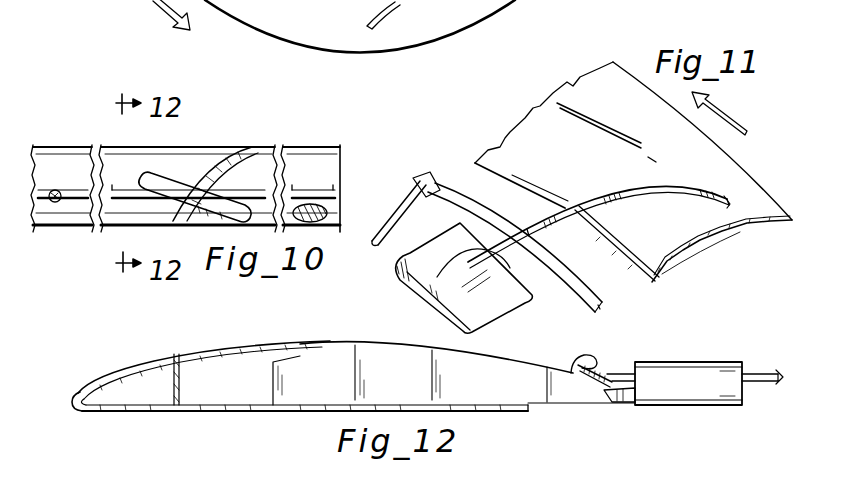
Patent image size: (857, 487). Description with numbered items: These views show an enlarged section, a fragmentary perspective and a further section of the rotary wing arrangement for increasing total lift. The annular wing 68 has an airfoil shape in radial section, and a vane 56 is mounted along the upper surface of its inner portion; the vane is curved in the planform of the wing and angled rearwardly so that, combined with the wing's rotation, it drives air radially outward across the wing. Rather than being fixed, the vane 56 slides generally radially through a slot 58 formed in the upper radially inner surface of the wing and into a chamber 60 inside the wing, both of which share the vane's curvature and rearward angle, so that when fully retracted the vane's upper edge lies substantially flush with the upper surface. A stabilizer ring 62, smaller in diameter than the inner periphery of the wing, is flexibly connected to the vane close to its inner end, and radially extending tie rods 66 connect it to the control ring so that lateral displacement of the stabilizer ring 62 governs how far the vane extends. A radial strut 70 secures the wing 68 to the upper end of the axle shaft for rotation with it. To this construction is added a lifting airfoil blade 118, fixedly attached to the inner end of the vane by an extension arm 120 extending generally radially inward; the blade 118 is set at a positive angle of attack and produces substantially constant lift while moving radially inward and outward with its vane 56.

In FIG. 10, the vane 56 is at (217, 158).
In FIG. 11, the vane 56 is at (593, 207).
In FIG. 12, the vane 56 is at (363, 340).
In FIG. 11, the slot 58 is at (722, 195).
In FIG. 12, the slot 58 is at (233, 404).
In FIG. 11, the chamber 60 is at (707, 250).
In FIG. 12, the chamber 60 is at (213, 373).
In FIG. 10, the stabilizer ring 62 is at (130, 188).
In FIG. 11, the stabilizer ring 62 is at (484, 206).
In FIG. 12, the stabilizer ring 62 is at (585, 365).
In FIG. 10, the tie rod 66 is at (60, 201).
In FIG. 11, the tie rod 66 is at (446, 205).
In FIG. 12, the tie rod 66 is at (757, 367).
In FIG. 10, the wing 68 is at (307, 150).
In FIG. 11, the wing 68 is at (613, 80).
In FIG. 12, the wing 68 is at (112, 380).
In FIG. 10, the radial strut 70 is at (386, 198).
In FIG. 10, the lifting airfoil blade 118 is at (176, 201).
In FIG. 11, the lifting airfoil blade 118 is at (507, 303).
In FIG. 12, the lifting airfoil blade 118 is at (680, 390).
In FIG. 11, the extension arm 120 is at (400, 276).
In FIG. 12, the extension arm 120 is at (617, 403).